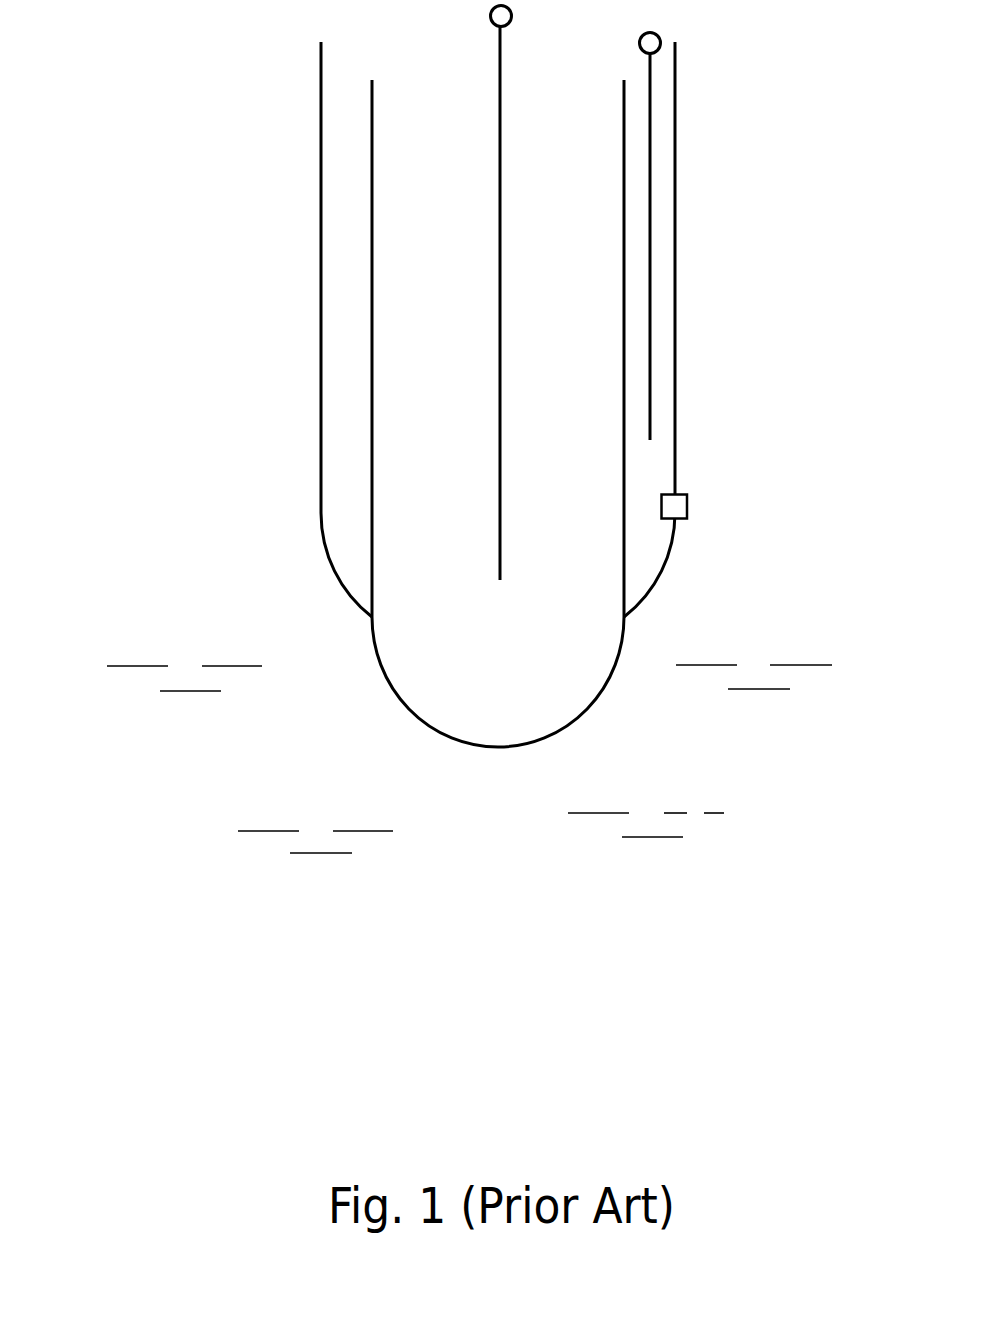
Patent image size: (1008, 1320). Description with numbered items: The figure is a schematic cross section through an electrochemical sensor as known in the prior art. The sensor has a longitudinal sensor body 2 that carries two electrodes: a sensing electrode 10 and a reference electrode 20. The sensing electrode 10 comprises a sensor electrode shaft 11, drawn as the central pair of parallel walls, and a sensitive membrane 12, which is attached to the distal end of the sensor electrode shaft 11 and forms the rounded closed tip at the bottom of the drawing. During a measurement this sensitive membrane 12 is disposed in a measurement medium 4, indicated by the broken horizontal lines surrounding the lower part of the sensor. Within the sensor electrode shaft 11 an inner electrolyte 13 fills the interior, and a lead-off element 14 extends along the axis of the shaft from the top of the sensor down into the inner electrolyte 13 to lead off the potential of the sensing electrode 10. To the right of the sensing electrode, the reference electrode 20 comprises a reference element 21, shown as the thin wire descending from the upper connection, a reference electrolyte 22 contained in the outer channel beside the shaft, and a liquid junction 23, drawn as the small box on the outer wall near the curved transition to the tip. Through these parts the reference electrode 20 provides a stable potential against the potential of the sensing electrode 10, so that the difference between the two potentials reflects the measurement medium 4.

The sensor body 2 is at (160, 230).
The measurement medium 4 is at (778, 850).
The sensing electrode 10 is at (440, 372).
The sensor electrode shaft 11 is at (372, 282).
The sensitive membrane 12 is at (403, 697).
The inner electrolyte 13 is at (450, 445).
The lead-off element 14 is at (500, 492).
The reference electrode 20 is at (663, 363).
The reference element 21 is at (650, 409).
The reference electrolyte 22 is at (661, 463).
The liquid junction 23 is at (688, 507).